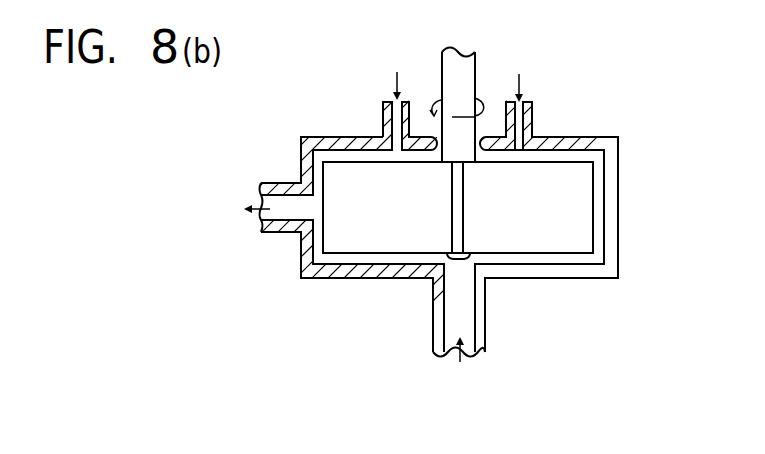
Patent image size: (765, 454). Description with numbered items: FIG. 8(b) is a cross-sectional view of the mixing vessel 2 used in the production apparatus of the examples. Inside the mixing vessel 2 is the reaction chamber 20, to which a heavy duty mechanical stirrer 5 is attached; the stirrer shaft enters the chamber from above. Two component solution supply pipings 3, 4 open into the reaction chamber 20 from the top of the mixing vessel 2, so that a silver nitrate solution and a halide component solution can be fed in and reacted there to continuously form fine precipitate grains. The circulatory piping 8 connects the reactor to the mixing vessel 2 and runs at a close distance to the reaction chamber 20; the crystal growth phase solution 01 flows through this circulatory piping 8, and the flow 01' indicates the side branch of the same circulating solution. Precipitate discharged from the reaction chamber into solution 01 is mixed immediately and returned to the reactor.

The mixing vessel 2 is at (618, 203).
The component solution supply piping 3 is at (384, 120).
The component solution supply piping 4 is at (533, 119).
The heavy duty mechanical stirrer 5 is at (478, 71).
The circulatory piping 8 is at (341, 279).
The reaction chamber 20 is at (593, 262).
The crystal growth phase solution 01 is at (464, 365).
The side outlet flow 01' is at (237, 212).